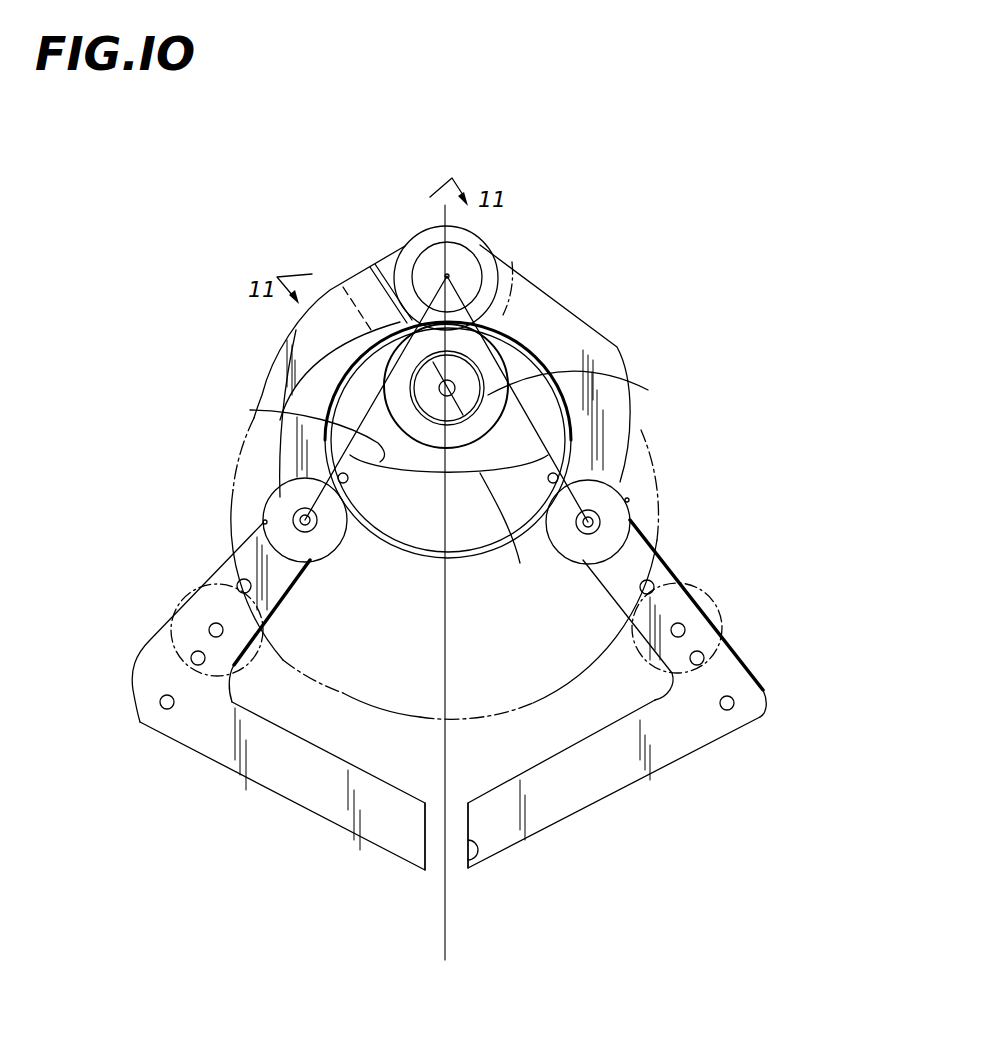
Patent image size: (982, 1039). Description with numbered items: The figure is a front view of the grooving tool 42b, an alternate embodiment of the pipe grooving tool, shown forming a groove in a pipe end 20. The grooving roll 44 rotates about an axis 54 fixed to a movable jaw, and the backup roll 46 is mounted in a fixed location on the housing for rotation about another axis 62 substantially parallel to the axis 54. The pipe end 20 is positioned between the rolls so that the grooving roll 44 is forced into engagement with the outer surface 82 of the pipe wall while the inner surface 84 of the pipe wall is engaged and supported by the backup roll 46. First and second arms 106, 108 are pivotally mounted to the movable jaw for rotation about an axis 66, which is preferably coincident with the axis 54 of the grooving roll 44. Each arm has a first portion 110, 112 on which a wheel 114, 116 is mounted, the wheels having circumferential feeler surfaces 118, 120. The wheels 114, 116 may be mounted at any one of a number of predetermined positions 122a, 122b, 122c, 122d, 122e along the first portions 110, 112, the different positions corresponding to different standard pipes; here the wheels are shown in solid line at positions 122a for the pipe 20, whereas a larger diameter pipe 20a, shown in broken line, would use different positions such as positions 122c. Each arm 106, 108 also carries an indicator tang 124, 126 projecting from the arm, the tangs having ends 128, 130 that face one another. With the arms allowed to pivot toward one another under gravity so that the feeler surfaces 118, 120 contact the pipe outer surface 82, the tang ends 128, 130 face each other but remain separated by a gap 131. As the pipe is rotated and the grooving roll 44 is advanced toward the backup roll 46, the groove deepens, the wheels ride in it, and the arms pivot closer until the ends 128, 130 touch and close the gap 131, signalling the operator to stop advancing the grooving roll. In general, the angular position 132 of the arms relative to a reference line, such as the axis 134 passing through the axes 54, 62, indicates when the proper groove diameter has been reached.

The pipe end 20 is at (555, 437).
The larger diameter pipe 20a is at (497, 713).
The grooving tool 42b is at (752, 383).
The grooving roll 44 is at (473, 296).
The backup roll 46 is at (555, 365).
The axis 54 is at (452, 272).
The axis 62 is at (495, 358).
The axis 66 is at (450, 275).
The outer surface 82 is at (588, 383).
The inner surface 84 is at (394, 533).
The first arm 106 is at (270, 368).
The second arm 108 is at (545, 285).
The first portion 110 is at (152, 662).
The first portion 112 is at (655, 594).
The wheel 114 is at (268, 498).
The wheel 116 is at (630, 517).
The circumferential feeler surface 118 is at (300, 568).
The circumferential feeler surface 120 is at (585, 562).
The predetermined position 122a is at (265, 522).
The predetermined position 122b is at (251, 586).
The predetermined position 122c is at (223, 630).
The predetermined position 122d is at (205, 658).
The predetermined position 122e is at (161, 705).
The indicator tang 124 is at (258, 773).
The indicator tang 126 is at (575, 790).
The tang end 128 is at (425, 845).
The tang end 130 is at (468, 848).
The gap 131 is at (453, 820).
The angular position 132 is at (250, 410).
The axis 134 is at (447, 893).